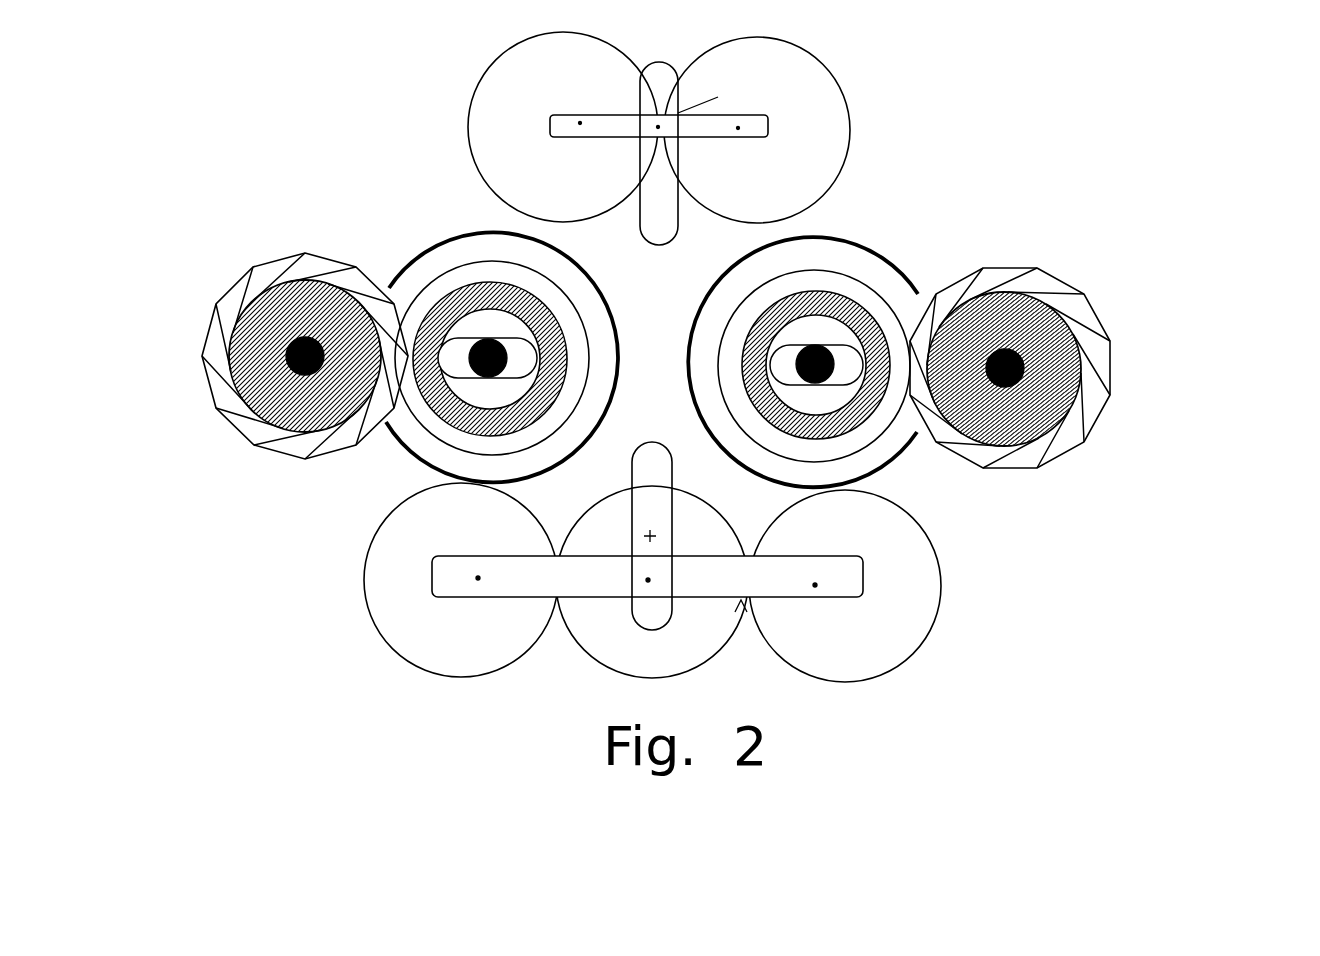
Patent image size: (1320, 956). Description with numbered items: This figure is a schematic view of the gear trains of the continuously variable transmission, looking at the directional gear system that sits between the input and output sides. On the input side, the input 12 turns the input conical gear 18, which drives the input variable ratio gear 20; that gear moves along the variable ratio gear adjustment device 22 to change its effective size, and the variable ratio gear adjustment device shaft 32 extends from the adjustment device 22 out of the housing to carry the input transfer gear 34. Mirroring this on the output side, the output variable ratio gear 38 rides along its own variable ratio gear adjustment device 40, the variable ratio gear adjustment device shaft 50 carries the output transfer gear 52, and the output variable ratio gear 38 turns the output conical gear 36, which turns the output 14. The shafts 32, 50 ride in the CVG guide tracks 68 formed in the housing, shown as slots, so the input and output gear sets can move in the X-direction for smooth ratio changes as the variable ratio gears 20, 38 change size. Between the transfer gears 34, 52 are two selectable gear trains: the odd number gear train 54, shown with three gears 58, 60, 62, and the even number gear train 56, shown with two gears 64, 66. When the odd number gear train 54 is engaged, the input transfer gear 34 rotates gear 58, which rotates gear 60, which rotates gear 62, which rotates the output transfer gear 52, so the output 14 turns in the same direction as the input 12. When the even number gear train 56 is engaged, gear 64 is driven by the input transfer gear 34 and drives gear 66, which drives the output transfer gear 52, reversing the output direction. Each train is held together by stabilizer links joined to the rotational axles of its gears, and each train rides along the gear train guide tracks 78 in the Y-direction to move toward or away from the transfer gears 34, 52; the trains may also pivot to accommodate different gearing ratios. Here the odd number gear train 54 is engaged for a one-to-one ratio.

The input 12 is at (270, 314).
The output 14 is at (1099, 367).
The input conical gear 18 is at (275, 262).
The input variable ratio gear 20 is at (462, 290).
The variable ratio gear adjustment device 22 is at (420, 290).
The variable ratio gear adjustment device shaft 32 is at (485, 340).
The input transfer gear 34 is at (397, 445).
The output conical gear 36 is at (1085, 318).
The output variable ratio gear 38 is at (760, 308).
The variable ratio gear adjustment device 40 is at (728, 340).
The variable ratio gear adjustment device shaft 50 is at (818, 350).
The output transfer gear 52 is at (897, 460).
The odd number gear train 54 is at (740, 540).
The even number gear train 56 is at (802, 285).
The gear 58 is at (461, 580).
The gear 60 is at (652, 582).
The gear 62 is at (845, 586).
The gear 64 is at (563, 127).
The gear 66 is at (757, 130).
The CVG guide tracks 68 is at (520, 348).
The gear train guide tracks 78 is at (650, 450).